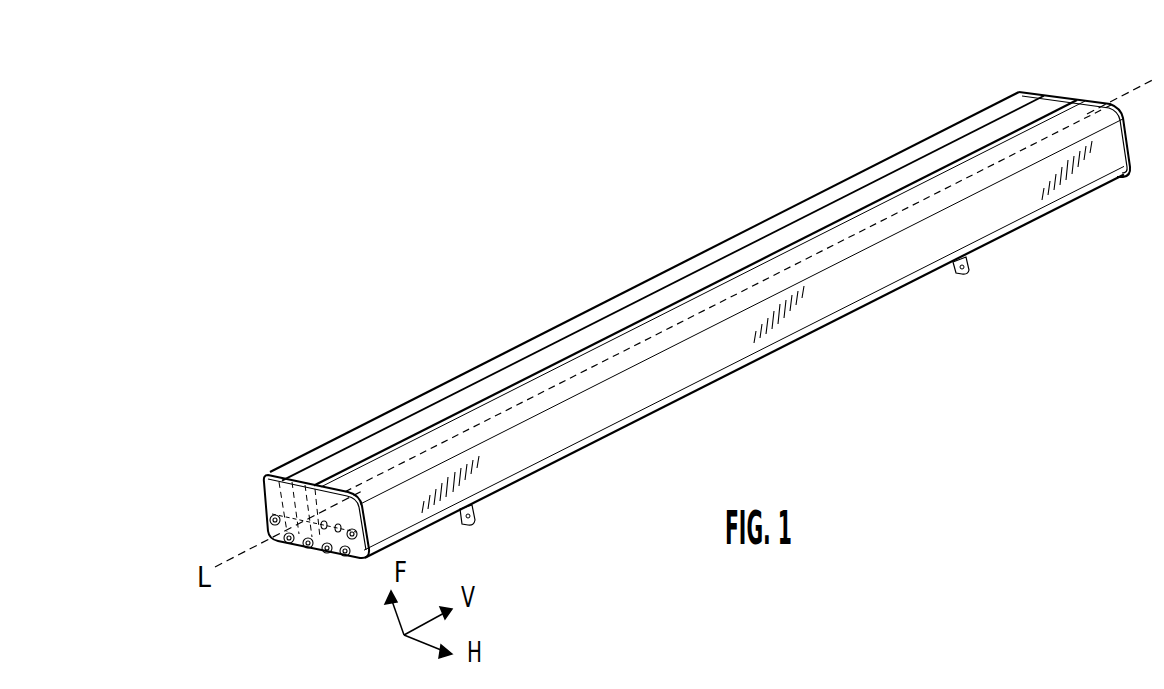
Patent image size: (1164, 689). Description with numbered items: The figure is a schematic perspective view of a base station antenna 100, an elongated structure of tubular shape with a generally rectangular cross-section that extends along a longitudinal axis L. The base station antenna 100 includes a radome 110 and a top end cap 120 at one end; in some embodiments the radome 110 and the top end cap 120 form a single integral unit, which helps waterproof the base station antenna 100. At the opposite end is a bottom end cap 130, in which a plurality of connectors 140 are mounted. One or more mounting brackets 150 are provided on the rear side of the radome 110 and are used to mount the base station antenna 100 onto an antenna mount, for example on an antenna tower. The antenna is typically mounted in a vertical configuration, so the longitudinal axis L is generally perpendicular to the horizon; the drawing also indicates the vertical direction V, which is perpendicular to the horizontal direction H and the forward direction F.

The base station antenna 100 is at (480, 307).
The radome 110 is at (1085, 183).
The top end cap 120 is at (1093, 102).
The bottom end cap 130 is at (266, 492).
The connectors 140 is at (343, 555).
The mounting brackets 150 is at (955, 272).